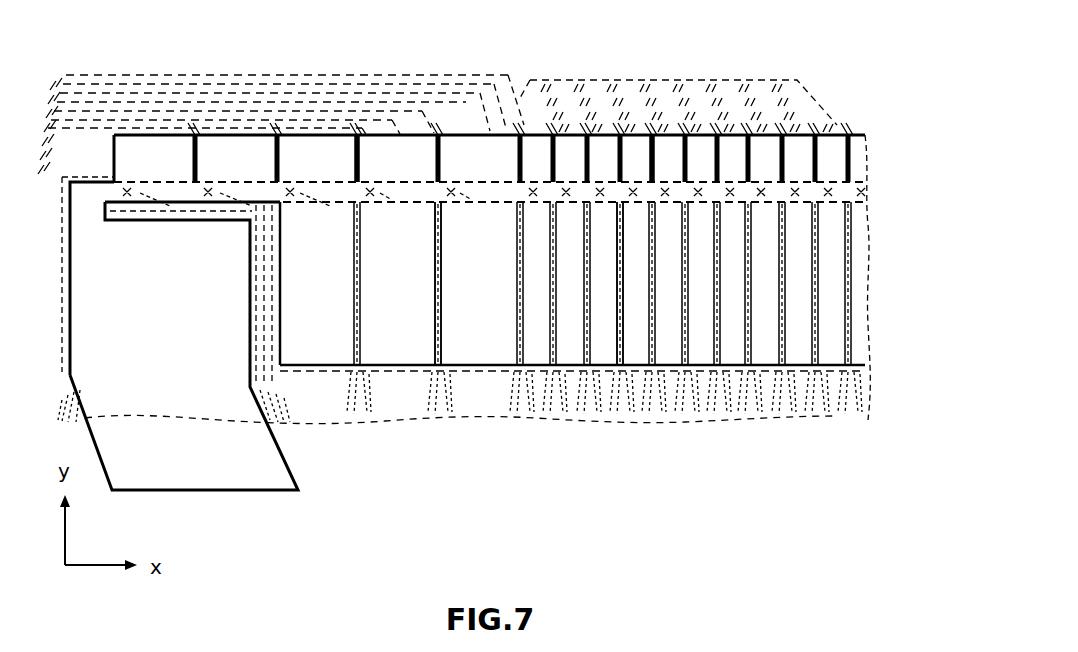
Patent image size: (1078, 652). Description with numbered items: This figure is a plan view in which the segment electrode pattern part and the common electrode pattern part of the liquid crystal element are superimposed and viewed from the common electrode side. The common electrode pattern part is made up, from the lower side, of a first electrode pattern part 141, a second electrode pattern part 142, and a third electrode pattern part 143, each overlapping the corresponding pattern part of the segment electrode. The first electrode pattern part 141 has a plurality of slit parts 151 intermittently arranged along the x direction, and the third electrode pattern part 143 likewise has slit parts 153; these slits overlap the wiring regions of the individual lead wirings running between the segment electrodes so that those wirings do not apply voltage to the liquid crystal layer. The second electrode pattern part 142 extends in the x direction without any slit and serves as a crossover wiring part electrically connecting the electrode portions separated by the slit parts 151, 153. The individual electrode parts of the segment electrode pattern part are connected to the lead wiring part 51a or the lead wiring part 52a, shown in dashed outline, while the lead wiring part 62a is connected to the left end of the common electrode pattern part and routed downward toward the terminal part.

The first electrode pattern part 141 is at (878, 295).
The second electrode pattern part 142 is at (878, 198).
The third electrode pattern part 143 is at (878, 152).
The slit part 151 is at (620, 418).
The slit part 153 is at (652, 135).
The lead wiring part 51a is at (735, 55).
The lead wiring part 52a is at (697, 440).
The lead wiring part 62a is at (215, 455).